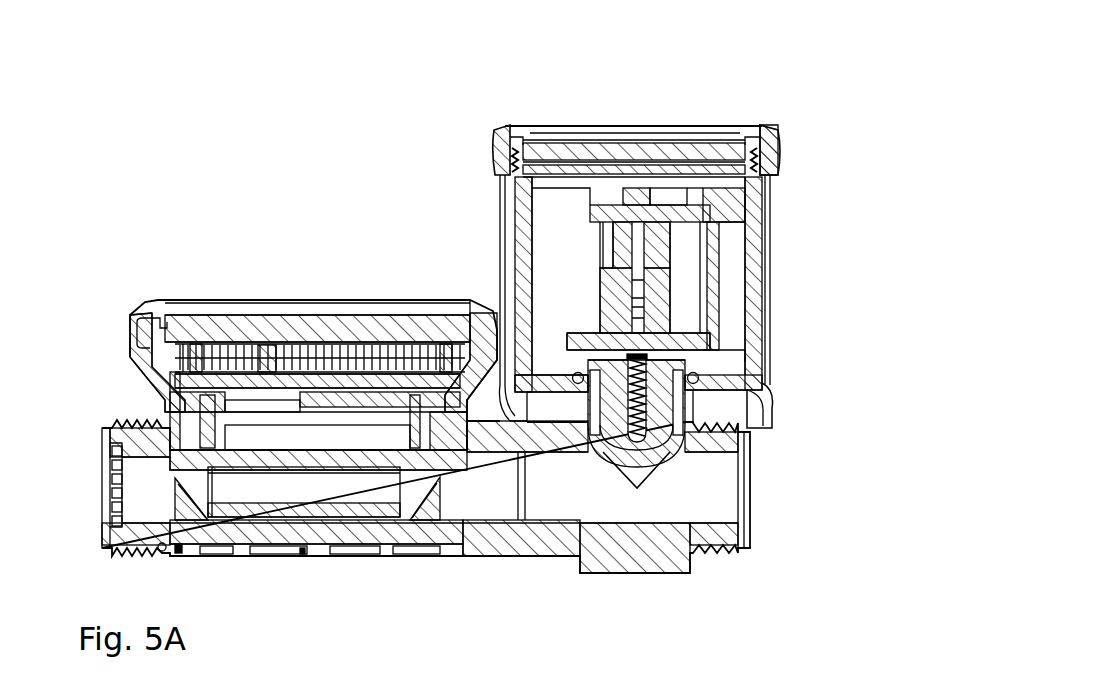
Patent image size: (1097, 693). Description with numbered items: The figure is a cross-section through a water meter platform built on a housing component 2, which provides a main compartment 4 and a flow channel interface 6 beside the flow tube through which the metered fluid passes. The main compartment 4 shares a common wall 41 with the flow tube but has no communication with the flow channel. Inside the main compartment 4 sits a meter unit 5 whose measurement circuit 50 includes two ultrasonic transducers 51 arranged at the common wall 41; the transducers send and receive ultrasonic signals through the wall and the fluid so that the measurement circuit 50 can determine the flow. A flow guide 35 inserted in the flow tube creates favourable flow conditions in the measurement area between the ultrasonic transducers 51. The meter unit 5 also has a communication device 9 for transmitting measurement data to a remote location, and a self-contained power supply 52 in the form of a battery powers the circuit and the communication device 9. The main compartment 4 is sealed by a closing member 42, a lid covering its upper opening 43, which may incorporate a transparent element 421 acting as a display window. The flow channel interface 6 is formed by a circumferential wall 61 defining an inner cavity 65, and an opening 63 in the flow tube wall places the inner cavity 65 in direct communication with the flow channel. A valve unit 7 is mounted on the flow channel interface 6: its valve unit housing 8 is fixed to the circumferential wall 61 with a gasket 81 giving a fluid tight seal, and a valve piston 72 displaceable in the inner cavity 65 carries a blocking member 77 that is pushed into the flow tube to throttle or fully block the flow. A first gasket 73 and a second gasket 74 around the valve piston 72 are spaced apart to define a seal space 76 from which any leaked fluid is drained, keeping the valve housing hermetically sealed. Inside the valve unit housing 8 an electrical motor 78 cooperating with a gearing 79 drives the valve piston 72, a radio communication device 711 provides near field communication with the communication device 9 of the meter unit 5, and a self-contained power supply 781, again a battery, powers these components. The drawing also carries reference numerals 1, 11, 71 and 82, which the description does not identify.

The water outlet device 1 is at (171, 226).
The housing component 2 is at (470, 535).
The main compartment 4 is at (150, 395).
The meter unit 5 is at (130, 353).
The flow channel interface 6 is at (745, 345).
The valve unit 7 is at (830, 142).
The valve unit housing 8 is at (510, 200).
The communication device 9 is at (265, 330).
The bottom wall of main body 11 is at (507, 540).
The flow guide 35 is at (270, 548).
The common wall 41 is at (325, 542).
The closing member 42 is at (140, 312).
The upper opening 43 is at (355, 330).
The measurement circuit 50 is at (282, 340).
The ultrasonic transducers 51 is at (203, 330).
The self-contained power supply 52 is at (196, 340).
The circumferential wall 61 is at (765, 407).
The opening 63 is at (640, 490).
The inner cavity 65 is at (700, 442).
The top plate of valve 71 is at (615, 158).
The valve piston 72 is at (690, 330).
The first gasket 73 is at (660, 300).
The second gasket 74 is at (655, 265).
The seal space 76 is at (655, 285).
The blocking member 77 is at (690, 430).
The electrical motor 78 is at (750, 330).
The gearing 79 is at (745, 215).
The gasket 81 is at (742, 376).
The cap 82 is at (505, 155).
The transparent element 421 is at (320, 325).
The radio communication device 711 is at (705, 158).
The self-contained power supply 781 is at (568, 235).